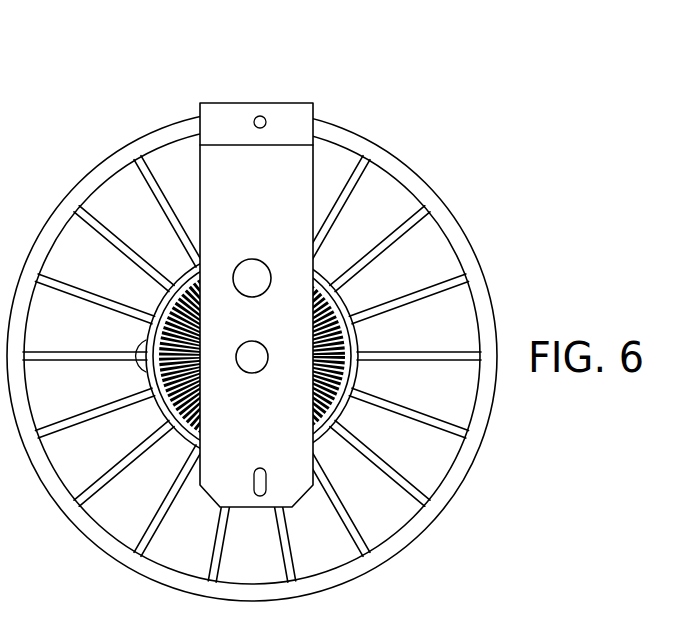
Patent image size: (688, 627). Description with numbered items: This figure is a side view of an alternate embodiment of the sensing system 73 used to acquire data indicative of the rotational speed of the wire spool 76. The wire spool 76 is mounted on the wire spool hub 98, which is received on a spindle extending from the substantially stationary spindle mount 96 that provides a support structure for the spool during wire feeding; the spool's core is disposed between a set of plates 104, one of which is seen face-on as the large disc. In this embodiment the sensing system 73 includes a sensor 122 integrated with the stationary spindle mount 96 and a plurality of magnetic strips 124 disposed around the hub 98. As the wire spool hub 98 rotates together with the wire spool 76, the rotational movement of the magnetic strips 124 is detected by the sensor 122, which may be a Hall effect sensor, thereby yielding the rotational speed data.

The wire spool 76 is at (92, 132).
The spindle mount 96 is at (226, 113).
The plates 104 is at (347, 143).
The sensing system 73 is at (210, 230).
The sensor 122 is at (253, 272).
The magnetic strips 124 is at (316, 288).
The wire spool hub 98 is at (338, 410).